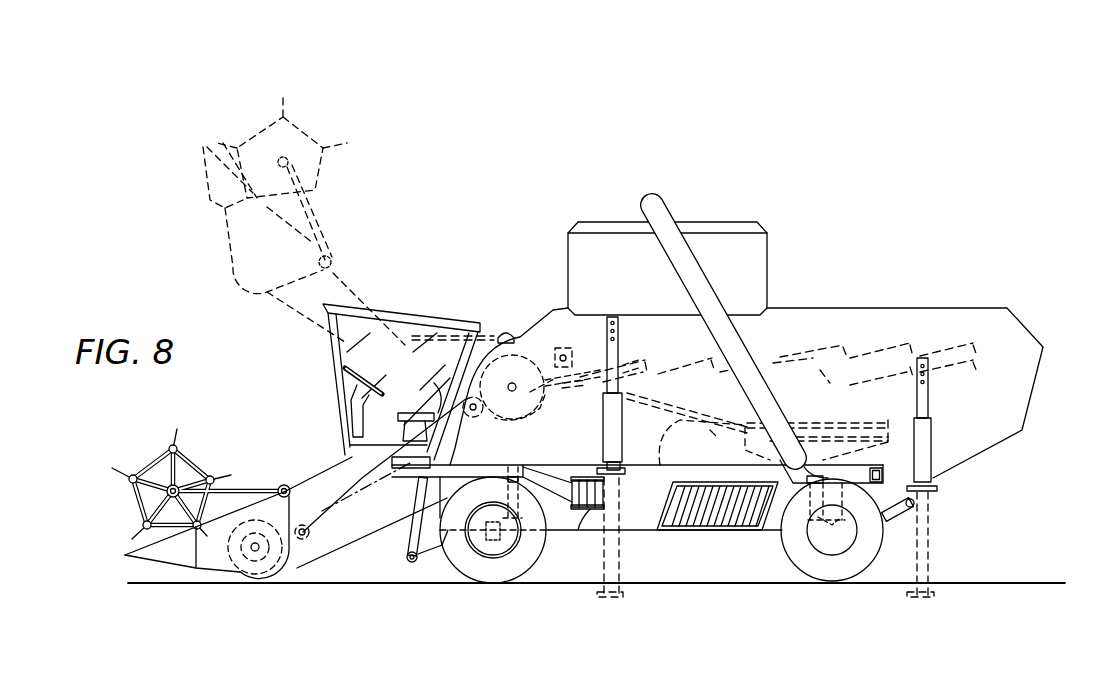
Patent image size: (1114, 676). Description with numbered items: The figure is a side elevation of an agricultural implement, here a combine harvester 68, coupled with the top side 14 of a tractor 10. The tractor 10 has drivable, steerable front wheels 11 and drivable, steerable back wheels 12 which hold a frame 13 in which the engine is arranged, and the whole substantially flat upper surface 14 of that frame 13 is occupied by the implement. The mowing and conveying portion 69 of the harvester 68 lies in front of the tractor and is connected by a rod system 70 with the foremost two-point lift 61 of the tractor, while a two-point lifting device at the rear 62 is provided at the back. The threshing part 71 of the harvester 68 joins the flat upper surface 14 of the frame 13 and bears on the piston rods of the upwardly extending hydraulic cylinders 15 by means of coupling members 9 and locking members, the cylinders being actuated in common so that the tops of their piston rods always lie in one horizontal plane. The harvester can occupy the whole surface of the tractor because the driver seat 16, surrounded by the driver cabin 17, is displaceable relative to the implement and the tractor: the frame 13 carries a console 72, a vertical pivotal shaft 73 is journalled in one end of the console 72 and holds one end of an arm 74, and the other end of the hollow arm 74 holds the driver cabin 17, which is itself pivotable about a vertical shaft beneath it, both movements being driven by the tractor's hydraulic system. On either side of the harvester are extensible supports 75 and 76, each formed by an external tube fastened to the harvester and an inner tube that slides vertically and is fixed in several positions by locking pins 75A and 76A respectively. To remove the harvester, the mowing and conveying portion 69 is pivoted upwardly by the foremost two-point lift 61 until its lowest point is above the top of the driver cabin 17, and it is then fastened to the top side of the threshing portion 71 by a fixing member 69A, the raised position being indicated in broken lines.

The coupling means 9 is at (520, 466).
The tractor 10 is at (685, 538).
The front wheels 11 is at (485, 578).
The back wheels 12 is at (792, 553).
The frame 13 is at (722, 531).
The top side 14 is at (672, 468).
The hydraulic cylinders 15 is at (503, 493).
The driver seat 16 is at (379, 372).
The driver cabin 17 is at (412, 336).
The foremost two-point lift 61 is at (421, 565).
The two-point lifting device at the rear 62 is at (899, 524).
The combine harvester 68 is at (812, 306).
The mowing and conveying portion 69 is at (337, 277).
The fixing member 69A is at (487, 333).
The rod system 70 is at (409, 533).
The threshing part 71 is at (1017, 333).
The console 72 is at (577, 476).
The vertical pivotal shaft 73 is at (575, 531).
The arm 74 is at (477, 470).
The extensible support 75 is at (604, 414).
The locking pins 75A is at (627, 466).
The extensible support 76 is at (925, 444).
The locking pins 76A is at (931, 481).